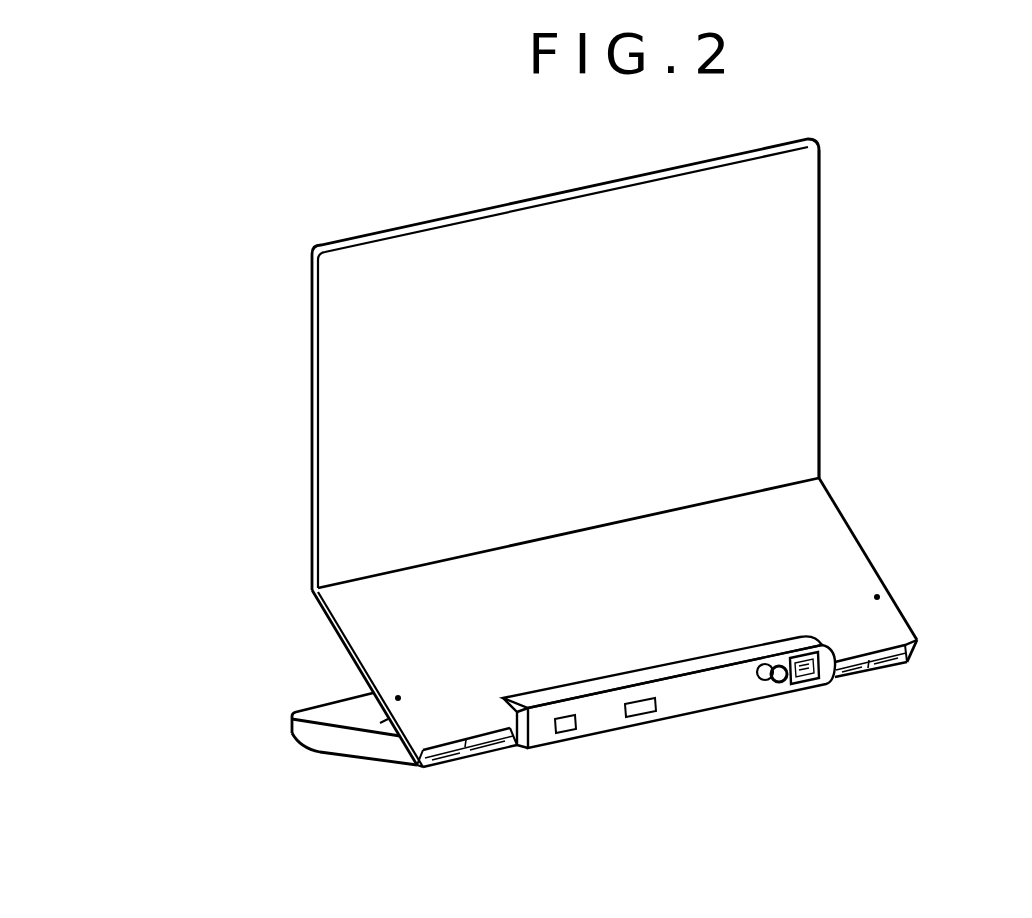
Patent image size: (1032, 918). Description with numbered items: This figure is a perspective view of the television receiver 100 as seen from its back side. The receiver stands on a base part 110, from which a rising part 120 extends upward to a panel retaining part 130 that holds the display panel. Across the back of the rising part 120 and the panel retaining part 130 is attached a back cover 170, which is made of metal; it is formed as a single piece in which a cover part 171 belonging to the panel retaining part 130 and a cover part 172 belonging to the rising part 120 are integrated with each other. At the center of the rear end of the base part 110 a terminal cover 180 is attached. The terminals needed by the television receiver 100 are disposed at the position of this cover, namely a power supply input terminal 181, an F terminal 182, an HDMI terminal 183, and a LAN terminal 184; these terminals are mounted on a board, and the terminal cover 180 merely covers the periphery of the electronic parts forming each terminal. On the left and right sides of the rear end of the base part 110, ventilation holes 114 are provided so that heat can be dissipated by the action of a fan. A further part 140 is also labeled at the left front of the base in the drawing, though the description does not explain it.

The television receiver 100 is at (820, 160).
The base part 110 is at (362, 762).
The ventilation holes 114 is at (485, 758).
The rising part 120 is at (863, 547).
The panel retaining part 130 is at (310, 347).
The stand side portion 140 is at (290, 719).
The back cover 170 is at (797, 372).
The cover part 171 is at (772, 245).
The cover part 172 is at (800, 520).
The terminal cover 180 is at (830, 680).
The power supply input terminal 181 is at (805, 682).
The F terminal 182 is at (780, 680).
The HDMI terminal 183 is at (642, 714).
The LAN terminal 184 is at (563, 732).